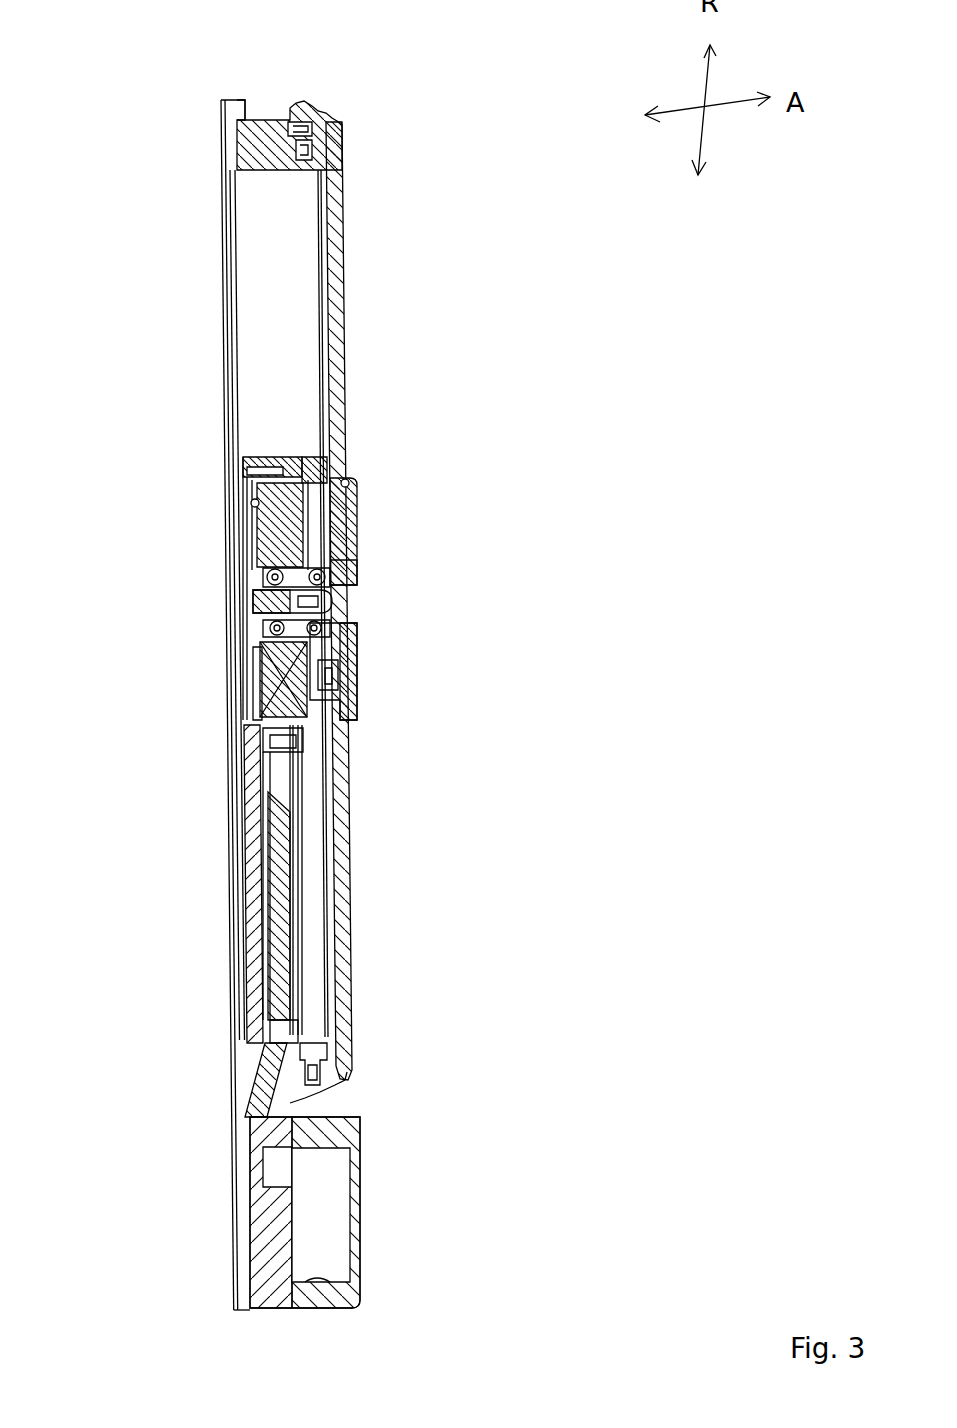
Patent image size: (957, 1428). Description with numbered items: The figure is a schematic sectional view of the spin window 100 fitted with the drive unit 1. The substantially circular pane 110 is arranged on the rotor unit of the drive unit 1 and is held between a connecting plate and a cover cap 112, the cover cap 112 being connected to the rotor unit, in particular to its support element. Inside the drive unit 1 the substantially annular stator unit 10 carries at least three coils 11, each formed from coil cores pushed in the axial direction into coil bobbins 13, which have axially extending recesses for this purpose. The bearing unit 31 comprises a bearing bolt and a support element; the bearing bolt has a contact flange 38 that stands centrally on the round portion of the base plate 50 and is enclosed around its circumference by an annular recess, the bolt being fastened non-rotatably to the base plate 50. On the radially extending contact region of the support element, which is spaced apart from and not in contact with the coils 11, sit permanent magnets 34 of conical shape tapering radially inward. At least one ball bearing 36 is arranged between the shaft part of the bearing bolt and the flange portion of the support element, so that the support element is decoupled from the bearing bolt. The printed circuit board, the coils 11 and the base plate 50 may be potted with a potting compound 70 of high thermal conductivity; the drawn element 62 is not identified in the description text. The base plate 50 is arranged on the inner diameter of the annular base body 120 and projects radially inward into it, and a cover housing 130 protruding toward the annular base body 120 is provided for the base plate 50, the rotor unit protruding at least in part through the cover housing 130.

The drive unit 1 is at (257, 783).
The stator unit 10 is at (251, 509).
The coils 11 is at (340, 465).
The coil bobbins 13 is at (353, 645).
The bearing unit 31 is at (353, 606).
The permanent magnets 34 is at (357, 508).
The ball bearing 36 is at (358, 580).
The contact flange 38 is at (277, 574).
The base plate 50 is at (251, 743).
The piston rod 62 is at (263, 888).
The potting compound 70 is at (280, 827).
The spin window 100 is at (324, 106).
The pane 110 is at (343, 263).
The cover cap 112 is at (357, 588).
The annular base body 120 is at (297, 1108).
The cover housing 130 is at (300, 955).